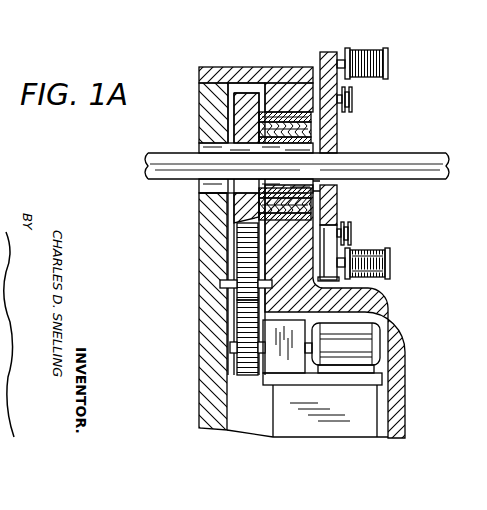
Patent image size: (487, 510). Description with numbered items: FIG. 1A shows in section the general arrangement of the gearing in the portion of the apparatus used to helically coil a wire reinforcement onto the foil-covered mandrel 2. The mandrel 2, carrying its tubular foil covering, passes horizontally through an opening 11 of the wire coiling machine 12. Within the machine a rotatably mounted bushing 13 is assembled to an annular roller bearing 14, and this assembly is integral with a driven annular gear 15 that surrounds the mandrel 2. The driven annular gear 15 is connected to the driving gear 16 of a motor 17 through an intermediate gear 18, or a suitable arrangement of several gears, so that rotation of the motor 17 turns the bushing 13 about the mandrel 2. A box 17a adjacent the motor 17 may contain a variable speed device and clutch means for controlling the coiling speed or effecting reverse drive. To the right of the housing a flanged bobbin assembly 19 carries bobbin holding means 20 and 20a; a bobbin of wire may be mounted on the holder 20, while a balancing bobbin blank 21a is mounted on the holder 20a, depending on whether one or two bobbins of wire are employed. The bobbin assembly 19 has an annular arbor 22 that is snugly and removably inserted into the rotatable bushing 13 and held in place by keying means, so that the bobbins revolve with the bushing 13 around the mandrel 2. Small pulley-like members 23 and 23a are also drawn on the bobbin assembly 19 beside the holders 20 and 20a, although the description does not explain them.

The mandrel 2 is at (403, 153).
The opening 11 is at (198, 186).
The wire coiling machine 12 is at (203, 252).
The bushing 13 is at (310, 130).
The annular roller bearing 14 is at (298, 113).
The driven annular gear 15 is at (245, 97).
The driving gear 16 is at (240, 333).
The motor 17 is at (368, 350).
The box 17a is at (288, 371).
The gear 18 is at (240, 270).
The flanged bobbin assembly 19 is at (338, 213).
The bobbin holding means 20 is at (342, 52).
The bobbin holding means 20a is at (342, 268).
The balancing bobbin blank 21a is at (390, 264).
The annular arbor 22 is at (335, 188).
The pulley 23 is at (352, 99).
The pulley 23a is at (352, 237).